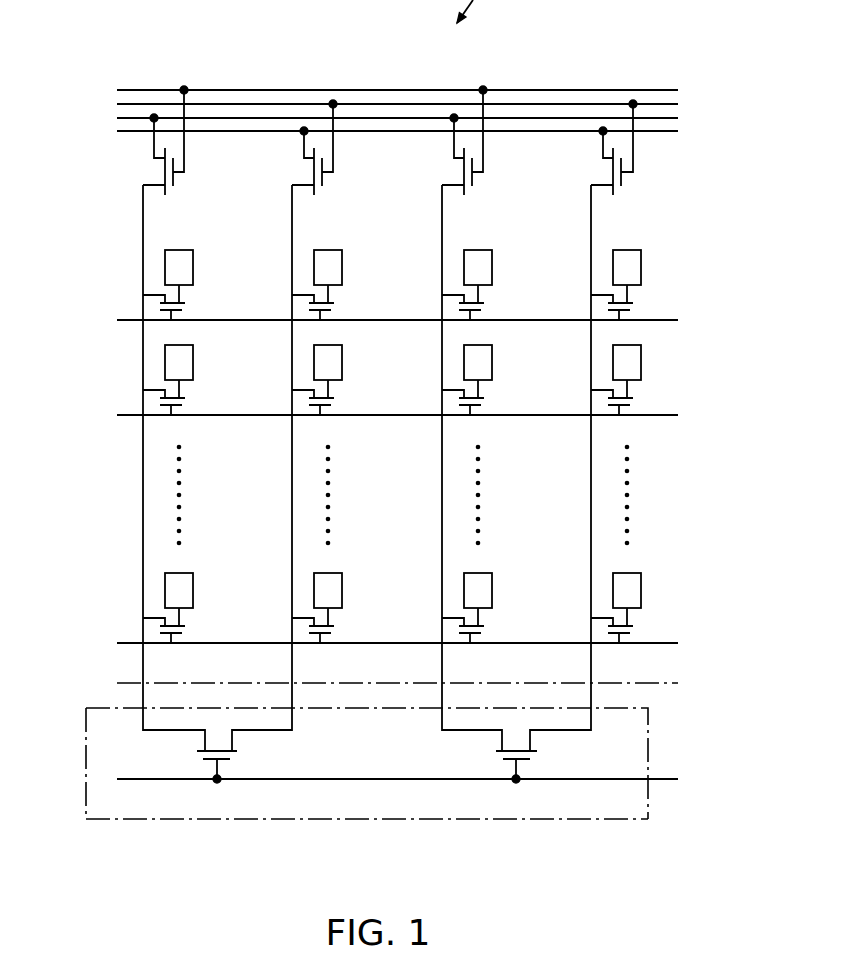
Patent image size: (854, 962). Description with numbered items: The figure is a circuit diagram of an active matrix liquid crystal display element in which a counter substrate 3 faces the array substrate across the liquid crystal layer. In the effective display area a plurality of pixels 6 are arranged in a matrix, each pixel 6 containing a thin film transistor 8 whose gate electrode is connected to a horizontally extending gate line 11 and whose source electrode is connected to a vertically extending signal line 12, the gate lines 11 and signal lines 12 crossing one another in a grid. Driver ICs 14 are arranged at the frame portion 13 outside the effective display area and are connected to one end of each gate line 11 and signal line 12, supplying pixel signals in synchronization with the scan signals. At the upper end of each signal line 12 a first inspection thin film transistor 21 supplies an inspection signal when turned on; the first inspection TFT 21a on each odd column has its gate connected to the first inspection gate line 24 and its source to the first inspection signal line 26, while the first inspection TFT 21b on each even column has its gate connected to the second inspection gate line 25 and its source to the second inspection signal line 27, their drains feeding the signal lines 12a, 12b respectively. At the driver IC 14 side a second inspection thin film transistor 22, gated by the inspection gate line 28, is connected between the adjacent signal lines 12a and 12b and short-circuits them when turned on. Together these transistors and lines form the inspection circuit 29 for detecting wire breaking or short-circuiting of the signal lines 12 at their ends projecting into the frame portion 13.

The counter substrate 3 is at (673, 687).
The pixel 6 is at (193, 256).
The thin film transistor 8 is at (190, 298).
The gate line 11 is at (124, 322).
The signal line 12 is at (337, 464).
The signal line 12a is at (143, 192).
The signal line 12b is at (292, 192).
The frame portion 13 is at (408, 794).
The driver IC 14 is at (300, 820).
The first inspection thin film transistor 21 is at (358, 98).
The first inspection TFT 21a is at (150, 168).
The first inspection TFT 21b is at (300, 168).
The second inspection thin film transistor 22 is at (207, 762).
The first inspection gate line 24 is at (160, 89).
The second inspection gate line 25 is at (207, 103).
The first inspection signal line 26 is at (507, 117).
The second inspection signal line 27 is at (553, 130).
The inspection gate line 28 is at (562, 780).
The inspection circuit 29 is at (397, 79).